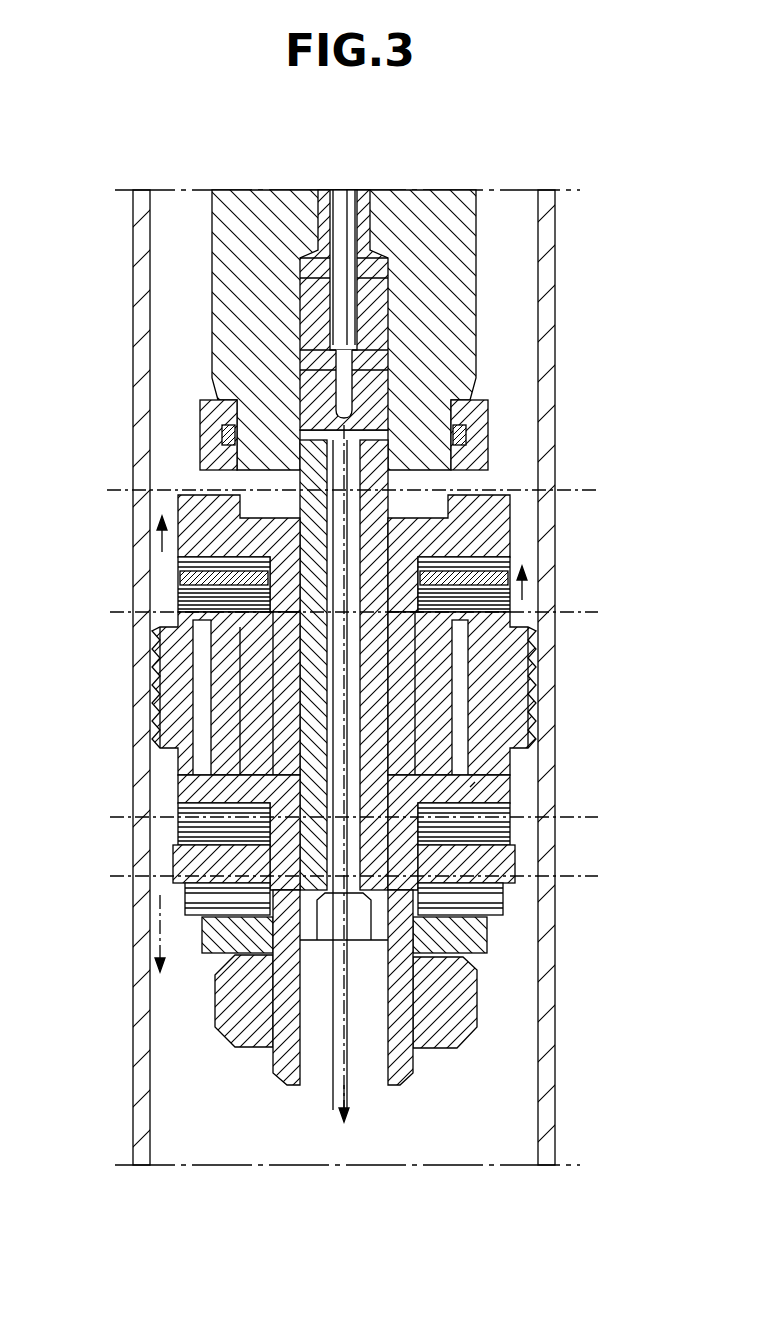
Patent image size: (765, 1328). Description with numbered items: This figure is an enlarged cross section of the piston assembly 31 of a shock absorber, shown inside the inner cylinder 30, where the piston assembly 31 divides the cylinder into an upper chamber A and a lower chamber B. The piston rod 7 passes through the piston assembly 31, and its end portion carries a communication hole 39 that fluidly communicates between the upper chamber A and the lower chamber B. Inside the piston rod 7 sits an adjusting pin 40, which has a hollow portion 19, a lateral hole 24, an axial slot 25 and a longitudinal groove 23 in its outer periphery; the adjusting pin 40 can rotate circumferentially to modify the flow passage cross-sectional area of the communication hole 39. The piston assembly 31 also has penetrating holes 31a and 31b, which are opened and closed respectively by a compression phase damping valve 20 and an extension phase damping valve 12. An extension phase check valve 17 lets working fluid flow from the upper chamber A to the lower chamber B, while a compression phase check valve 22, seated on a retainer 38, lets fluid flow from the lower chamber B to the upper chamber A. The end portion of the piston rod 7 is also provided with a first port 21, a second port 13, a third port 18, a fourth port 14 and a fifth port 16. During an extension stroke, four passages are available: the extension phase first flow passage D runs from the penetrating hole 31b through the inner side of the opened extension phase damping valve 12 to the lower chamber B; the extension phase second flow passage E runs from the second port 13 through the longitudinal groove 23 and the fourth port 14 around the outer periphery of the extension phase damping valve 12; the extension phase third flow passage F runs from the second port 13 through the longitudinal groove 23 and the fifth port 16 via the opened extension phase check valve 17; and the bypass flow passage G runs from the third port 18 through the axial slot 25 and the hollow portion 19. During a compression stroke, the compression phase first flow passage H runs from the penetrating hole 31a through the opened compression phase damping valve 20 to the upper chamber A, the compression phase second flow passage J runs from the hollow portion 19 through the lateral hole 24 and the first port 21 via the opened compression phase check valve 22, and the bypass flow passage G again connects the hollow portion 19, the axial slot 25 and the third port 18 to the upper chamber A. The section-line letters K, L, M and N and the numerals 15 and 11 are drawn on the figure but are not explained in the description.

The piston rod 7 is at (212, 239).
The inner cylinder 30 is at (554, 245).
The adjusting pin 40 is at (385, 415).
The first port 21 is at (470, 455).
The lateral hole 24 is at (478, 478).
The hollow portion 19 is at (512, 533).
The retainer 38 is at (515, 548).
The compression phase check valve 22 is at (180, 548).
The compression phase damping valve 20 is at (180, 573).
The piston assembly 31 is at (528, 692).
The penetrating hole 31a is at (165, 690).
The penetrating hole 31b is at (528, 722).
The longitudinal groove 23 is at (205, 722).
The third port 18 is at (470, 648).
The second port 13 is at (245, 638).
The axial slot 25 is at (392, 752).
The lower valve seat 15 is at (182, 795).
The fourth port 14 is at (275, 788).
The valve disc 11 is at (512, 802).
The extension phase damping valve 12 is at (515, 852).
The extension phase check valve 17 is at (490, 920).
The fifth port 16 is at (238, 978).
The communication hole 39 is at (395, 1088).
The upper chamber A is at (191, 346).
The lower chamber B is at (209, 1131).
The extension phase first flow passage D is at (470, 787).
The extension phase second flow passage E is at (182, 831).
The extension phase third flow passage F is at (125, 937).
The bypass flow passage G is at (352, 1120).
The compression phase first flow passage H is at (175, 590).
The compression phase second flow passage J is at (205, 498).
The section line K is at (347, 491).
The section line L is at (345, 608).
The section line M is at (343, 815).
The section line N is at (346, 874).